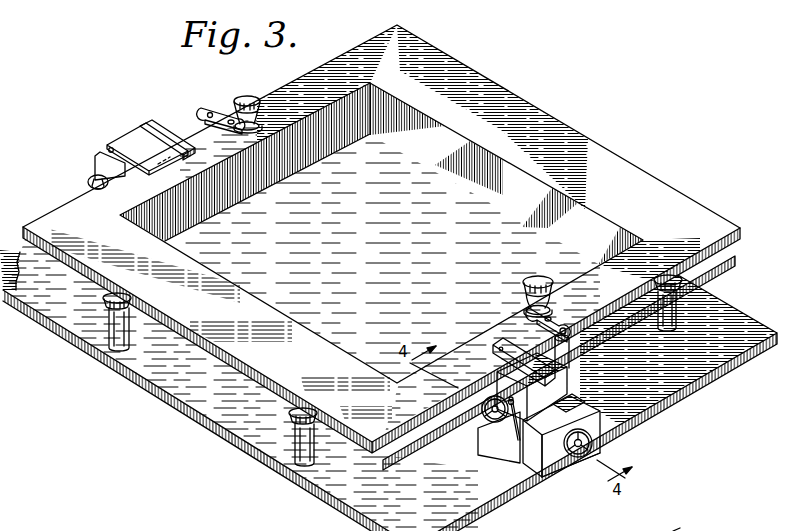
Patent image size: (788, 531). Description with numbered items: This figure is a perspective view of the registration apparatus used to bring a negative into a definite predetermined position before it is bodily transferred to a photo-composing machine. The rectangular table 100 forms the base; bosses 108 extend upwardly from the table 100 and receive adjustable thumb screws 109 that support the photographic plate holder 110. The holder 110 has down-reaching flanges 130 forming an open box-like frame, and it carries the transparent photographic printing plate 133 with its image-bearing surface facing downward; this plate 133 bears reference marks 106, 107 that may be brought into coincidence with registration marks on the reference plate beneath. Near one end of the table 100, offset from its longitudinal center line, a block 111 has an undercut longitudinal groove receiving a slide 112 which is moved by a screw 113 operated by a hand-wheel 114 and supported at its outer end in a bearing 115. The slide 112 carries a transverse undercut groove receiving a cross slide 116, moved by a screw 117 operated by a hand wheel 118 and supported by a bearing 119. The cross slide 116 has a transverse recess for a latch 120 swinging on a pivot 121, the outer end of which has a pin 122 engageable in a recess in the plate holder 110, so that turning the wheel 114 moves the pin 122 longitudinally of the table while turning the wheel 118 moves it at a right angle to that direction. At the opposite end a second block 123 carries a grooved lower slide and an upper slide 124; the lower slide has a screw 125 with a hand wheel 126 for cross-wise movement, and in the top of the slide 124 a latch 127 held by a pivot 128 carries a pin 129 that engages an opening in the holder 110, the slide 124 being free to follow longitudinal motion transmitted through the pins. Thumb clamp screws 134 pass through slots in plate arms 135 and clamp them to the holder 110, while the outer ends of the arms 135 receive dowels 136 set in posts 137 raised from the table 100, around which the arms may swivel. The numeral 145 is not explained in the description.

The rectangular table 100 is at (672, 373).
The reference mark 106 is at (498, 217).
The reference mark 107 is at (270, 192).
The boss 108 is at (117, 333).
The adjustable thumb screw 109 is at (106, 302).
The photographic plate holder 110 is at (238, 338).
The block 111 is at (548, 483).
The slide 112 is at (602, 394).
The screw 113 is at (530, 462).
The hand-wheel 114 is at (593, 438).
The bearing 115 is at (546, 462).
The cross slide 116 is at (497, 385).
The screw 117 is at (515, 442).
The hand wheel 118 is at (482, 420).
The bearing 119 is at (492, 440).
The latch 120 is at (573, 371).
The pivot 121 is at (537, 365).
The pin 122 is at (495, 346).
The second block 123 is at (95, 168).
The slide 124 is at (130, 146).
The screw 125 is at (90, 185).
The hand wheel 126 is at (90, 178).
The latch 127 is at (150, 134).
The pivot 128 is at (108, 149).
The pin 129 is at (158, 164).
The down-reaching flange 130 is at (432, 157).
The photographic printing plate 133 is at (382, 259).
The thumb clamp screw 134 is at (248, 99).
The plate arm 135 is at (236, 116).
The dowel 136 is at (208, 112).
The post 137 is at (203, 118).
The member 145 is at (673, 530).